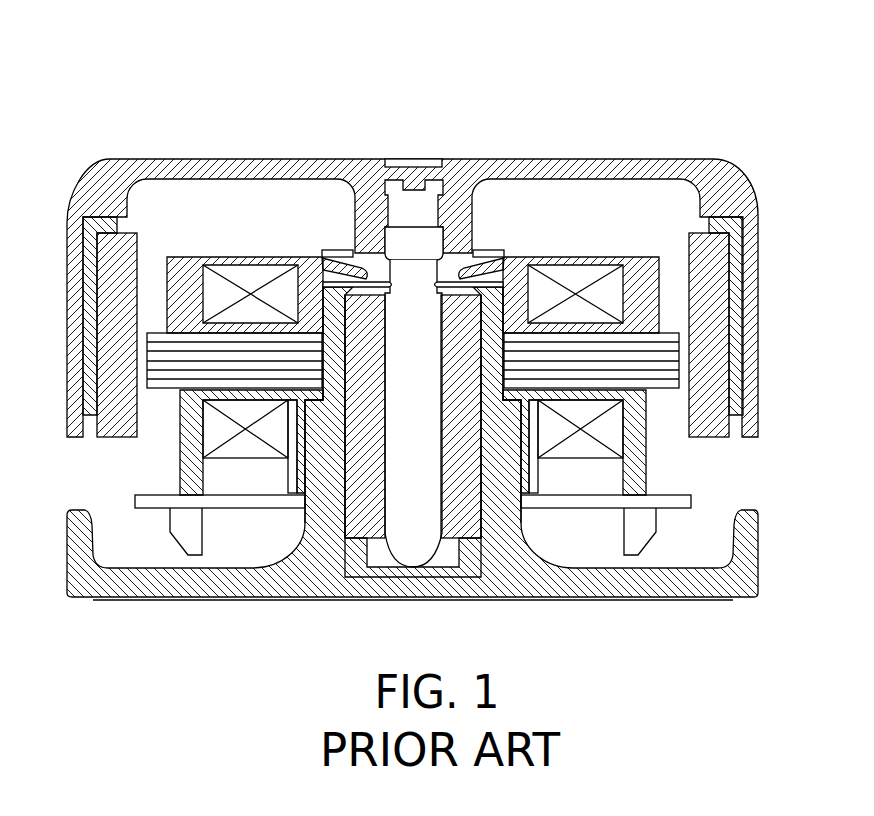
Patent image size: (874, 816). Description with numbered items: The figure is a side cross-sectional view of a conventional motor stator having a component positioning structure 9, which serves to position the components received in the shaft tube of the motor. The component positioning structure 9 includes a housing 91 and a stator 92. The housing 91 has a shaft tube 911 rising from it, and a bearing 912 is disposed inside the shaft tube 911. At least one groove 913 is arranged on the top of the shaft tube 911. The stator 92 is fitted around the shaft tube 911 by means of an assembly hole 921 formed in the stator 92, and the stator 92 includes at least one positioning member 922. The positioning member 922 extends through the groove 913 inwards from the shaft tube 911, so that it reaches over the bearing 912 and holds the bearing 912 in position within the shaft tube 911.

The component positioning structure 9 is at (443, 352).
The housing 91 is at (653, 585).
The shaft tube 911 is at (325, 473).
The bearing 912 is at (463, 527).
The groove 913 is at (330, 250).
The stator 92 is at (660, 312).
The assembly hole 921 is at (500, 393).
The positioning member 922 is at (352, 255).